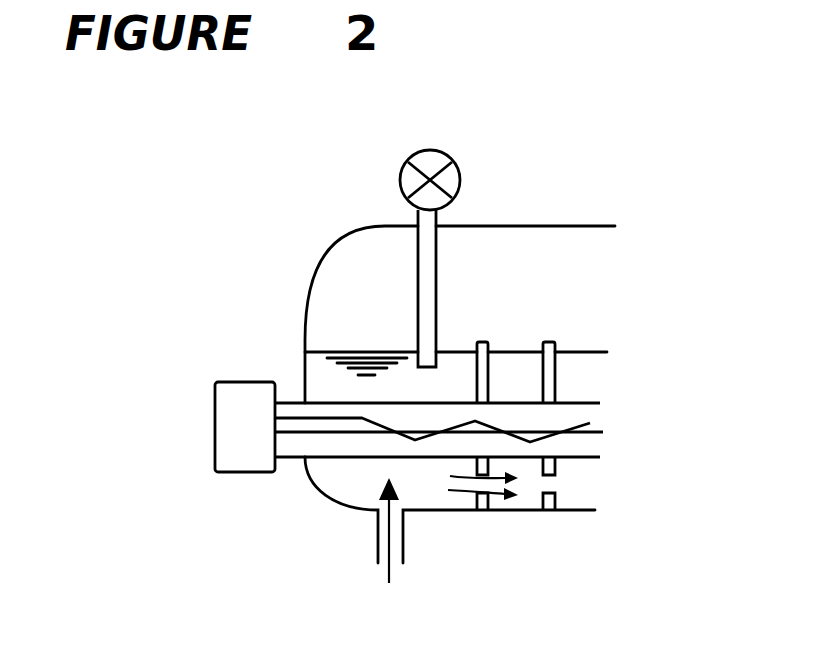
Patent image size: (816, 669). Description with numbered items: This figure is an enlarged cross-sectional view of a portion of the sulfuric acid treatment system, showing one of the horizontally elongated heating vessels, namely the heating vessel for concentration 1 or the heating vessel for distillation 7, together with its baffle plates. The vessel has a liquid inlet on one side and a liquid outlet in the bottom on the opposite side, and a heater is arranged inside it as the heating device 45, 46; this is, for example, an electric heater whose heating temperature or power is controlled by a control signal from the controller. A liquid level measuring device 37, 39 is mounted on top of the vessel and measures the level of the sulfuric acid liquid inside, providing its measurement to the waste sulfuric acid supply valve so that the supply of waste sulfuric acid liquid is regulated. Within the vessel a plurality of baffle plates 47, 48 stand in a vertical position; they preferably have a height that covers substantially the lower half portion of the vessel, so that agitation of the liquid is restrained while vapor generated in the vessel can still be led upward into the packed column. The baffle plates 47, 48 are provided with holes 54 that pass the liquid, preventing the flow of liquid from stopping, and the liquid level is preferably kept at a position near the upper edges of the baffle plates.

The heating vessel for concentration 1 is at (407, 404).
The heating vessel for distillation 7 is at (343, 292).
The liquid level measuring device 37 is at (345, 258).
The liquid level measuring device 39 is at (400, 175).
The heating device 45 is at (409, 491).
The heating device 46 is at (352, 438).
The baffle plates 47 is at (547, 431).
The baffle plates 48 is at (547, 342).
The holes 54 is at (558, 487).